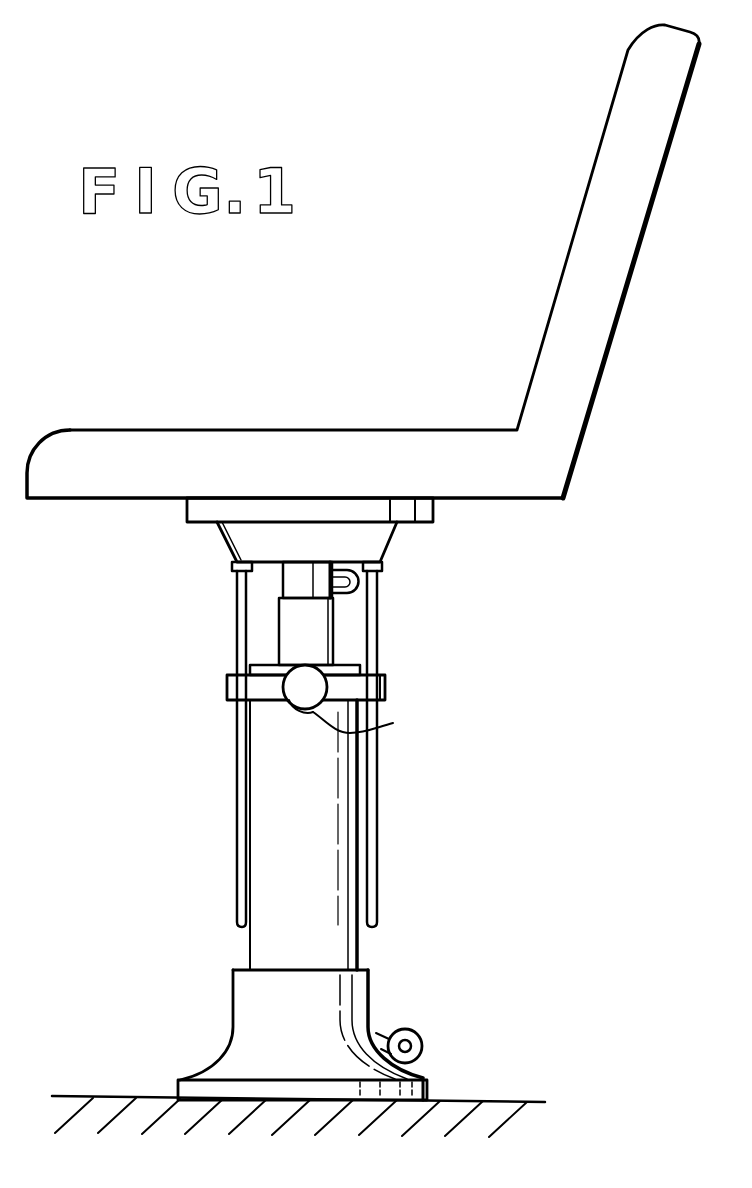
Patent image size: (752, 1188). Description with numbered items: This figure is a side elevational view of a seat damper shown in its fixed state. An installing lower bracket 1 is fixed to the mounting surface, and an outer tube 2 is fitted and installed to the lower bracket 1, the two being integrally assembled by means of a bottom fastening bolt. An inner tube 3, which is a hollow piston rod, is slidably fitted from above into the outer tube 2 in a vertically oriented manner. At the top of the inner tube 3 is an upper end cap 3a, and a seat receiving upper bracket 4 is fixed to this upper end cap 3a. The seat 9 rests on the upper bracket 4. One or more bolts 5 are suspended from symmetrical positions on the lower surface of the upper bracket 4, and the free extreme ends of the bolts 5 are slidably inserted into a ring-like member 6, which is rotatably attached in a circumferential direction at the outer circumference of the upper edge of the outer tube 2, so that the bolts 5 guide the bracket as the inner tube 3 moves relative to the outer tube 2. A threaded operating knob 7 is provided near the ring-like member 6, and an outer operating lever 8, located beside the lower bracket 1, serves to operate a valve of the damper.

The installing lower bracket 1 is at (232, 998).
The outer tube 2 is at (333, 912).
The inner tube 3 is at (312, 644).
The upper end cap 3a is at (290, 583).
The seat receiving upper bracket 4 is at (372, 558).
The bolts 5 is at (380, 655).
The ring-like member 6 is at (228, 688).
The threaded operating knob 7 is at (393, 723).
The outer operating lever 8 is at (418, 1032).
The seat 9 is at (203, 458).